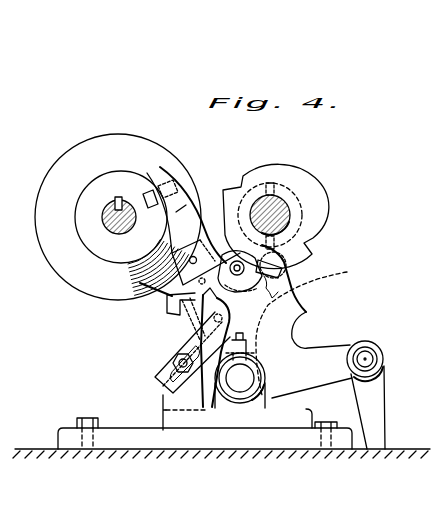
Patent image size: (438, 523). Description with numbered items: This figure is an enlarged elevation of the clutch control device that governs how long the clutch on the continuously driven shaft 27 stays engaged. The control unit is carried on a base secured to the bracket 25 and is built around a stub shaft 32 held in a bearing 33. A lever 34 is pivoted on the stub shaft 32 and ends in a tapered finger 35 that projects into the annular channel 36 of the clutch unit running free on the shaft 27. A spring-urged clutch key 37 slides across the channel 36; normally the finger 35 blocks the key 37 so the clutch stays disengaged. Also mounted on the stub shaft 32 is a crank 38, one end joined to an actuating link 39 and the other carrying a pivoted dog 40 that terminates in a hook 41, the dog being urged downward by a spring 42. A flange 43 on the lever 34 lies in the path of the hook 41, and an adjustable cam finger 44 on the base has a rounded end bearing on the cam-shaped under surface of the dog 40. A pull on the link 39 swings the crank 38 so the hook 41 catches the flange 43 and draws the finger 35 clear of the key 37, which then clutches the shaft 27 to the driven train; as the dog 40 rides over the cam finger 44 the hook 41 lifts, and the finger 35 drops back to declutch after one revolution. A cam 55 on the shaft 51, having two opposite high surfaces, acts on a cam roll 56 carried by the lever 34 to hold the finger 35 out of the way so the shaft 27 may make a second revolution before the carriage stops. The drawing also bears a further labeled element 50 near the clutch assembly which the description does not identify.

The bracket 25 is at (120, 452).
The shaft 27 is at (100, 212).
The stub shaft 32 is at (243, 377).
The bearing 33 is at (222, 393).
The lever 34 is at (163, 312).
The tapered finger 35 is at (176, 212).
The annular channel 36 is at (132, 157).
The clutch key 37 is at (149, 215).
The crank 38 is at (313, 355).
The actuating link 39 is at (380, 408).
The pivoted dog 40 is at (252, 277).
The hook 41 is at (173, 323).
The spring 42 is at (298, 295).
The flange 43 is at (170, 347).
The adjustable cam finger 44 is at (158, 380).
The spool 50 is at (99, 188).
The shaft 51 is at (198, 440).
The cam 55 is at (288, 183).
The cam roll 56 is at (288, 268).